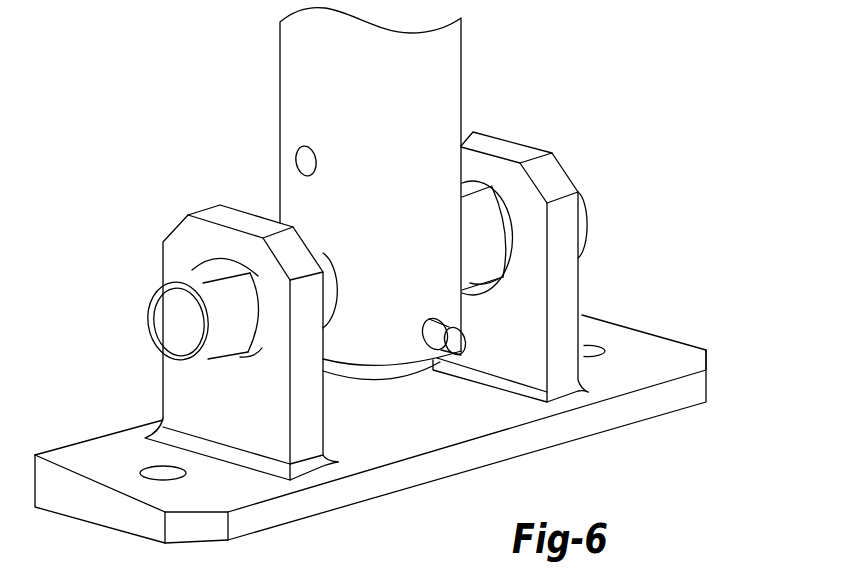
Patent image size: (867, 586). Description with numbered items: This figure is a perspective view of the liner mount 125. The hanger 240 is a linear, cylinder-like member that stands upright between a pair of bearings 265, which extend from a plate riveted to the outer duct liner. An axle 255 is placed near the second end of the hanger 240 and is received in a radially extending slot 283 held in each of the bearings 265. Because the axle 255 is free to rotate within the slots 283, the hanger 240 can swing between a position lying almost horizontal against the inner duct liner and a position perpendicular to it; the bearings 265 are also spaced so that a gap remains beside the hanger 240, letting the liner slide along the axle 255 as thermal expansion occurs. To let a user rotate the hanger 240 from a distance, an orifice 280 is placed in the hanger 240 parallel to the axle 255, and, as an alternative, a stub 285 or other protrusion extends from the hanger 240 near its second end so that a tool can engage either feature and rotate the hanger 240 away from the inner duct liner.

The mounting assembly 125 is at (186, 80).
The hanger 240 is at (447, 68).
The axle 255 is at (583, 226).
The bearings 265 is at (163, 392).
The orifice 280 is at (300, 161).
The slot 283 is at (197, 262).
The stub 285 is at (455, 340).